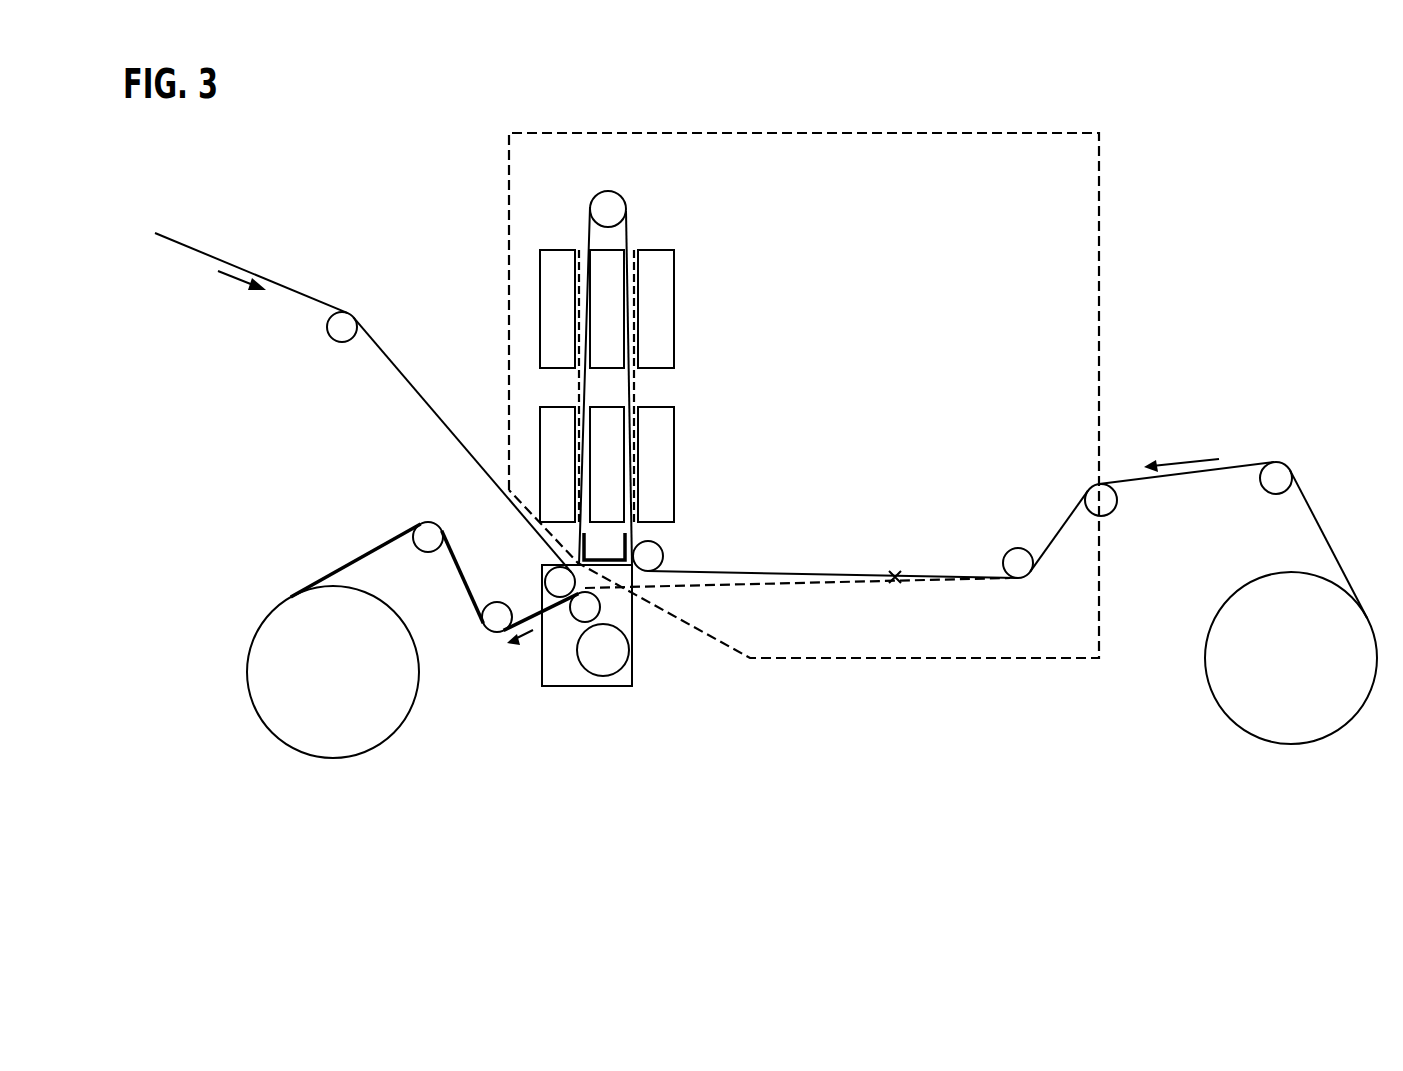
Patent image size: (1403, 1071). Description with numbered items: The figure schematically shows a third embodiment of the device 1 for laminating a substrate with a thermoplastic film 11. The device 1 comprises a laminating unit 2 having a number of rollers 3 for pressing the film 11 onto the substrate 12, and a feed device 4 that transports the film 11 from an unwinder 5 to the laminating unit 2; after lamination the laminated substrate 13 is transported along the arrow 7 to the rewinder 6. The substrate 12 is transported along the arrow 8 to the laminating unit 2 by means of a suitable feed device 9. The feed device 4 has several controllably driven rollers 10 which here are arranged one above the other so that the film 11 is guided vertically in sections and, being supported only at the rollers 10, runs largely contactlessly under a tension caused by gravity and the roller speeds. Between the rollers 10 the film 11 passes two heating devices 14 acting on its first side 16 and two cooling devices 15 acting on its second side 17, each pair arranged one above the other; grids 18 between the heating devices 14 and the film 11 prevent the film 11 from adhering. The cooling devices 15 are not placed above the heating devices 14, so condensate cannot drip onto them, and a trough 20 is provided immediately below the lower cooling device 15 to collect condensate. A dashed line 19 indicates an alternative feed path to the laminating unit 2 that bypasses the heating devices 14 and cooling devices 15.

The device 1 is at (548, 772).
The laminating unit 2 is at (602, 686).
The rollers 3 is at (548, 595).
The feed device 4 is at (1099, 235).
The unwinder 5 is at (1300, 719).
The rewinder 6 is at (340, 735).
The arrow 7 is at (525, 640).
The arrow 8 is at (237, 280).
The feed device 9 is at (374, 324).
The driven rollers 10 is at (610, 205).
The thermoplastic film 11 is at (1066, 521).
The substrate 12 is at (433, 410).
The laminated substrate 13 is at (383, 542).
The heating devices 14 is at (540, 283).
The cooling devices 15 is at (608, 260).
The first side 16 is at (895, 575).
The second side 17 is at (895, 580).
The grids 18 is at (577, 252).
The dashed line 19 is at (832, 588).
The trough 20 is at (618, 558).